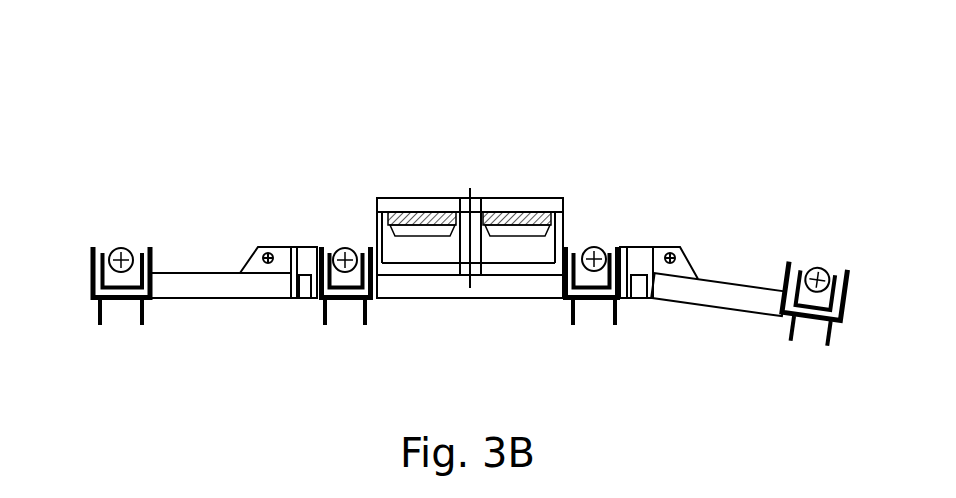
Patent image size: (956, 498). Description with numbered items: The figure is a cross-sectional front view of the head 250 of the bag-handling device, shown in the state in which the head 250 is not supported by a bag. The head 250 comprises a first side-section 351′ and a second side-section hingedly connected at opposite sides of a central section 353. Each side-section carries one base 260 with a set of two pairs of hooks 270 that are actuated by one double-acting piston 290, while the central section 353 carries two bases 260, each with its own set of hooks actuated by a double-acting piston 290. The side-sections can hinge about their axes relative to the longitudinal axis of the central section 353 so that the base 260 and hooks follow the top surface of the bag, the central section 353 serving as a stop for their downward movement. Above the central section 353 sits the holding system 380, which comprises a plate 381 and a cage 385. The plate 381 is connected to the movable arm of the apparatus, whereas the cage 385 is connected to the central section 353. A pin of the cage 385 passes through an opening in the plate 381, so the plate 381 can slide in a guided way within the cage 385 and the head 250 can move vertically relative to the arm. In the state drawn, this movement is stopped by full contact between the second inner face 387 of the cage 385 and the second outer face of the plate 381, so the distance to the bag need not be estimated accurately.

The head 250 is at (238, 72).
The base 260 is at (122, 300).
The hooks 270 is at (95, 318).
The double-acting piston 290 is at (126, 247).
The first side-section 351′ is at (218, 325).
The central section 353 is at (482, 323).
The holding system 380 is at (534, 182).
The plate 381 is at (420, 208).
The cage 385 is at (398, 208).
The second inner face 387 is at (510, 262).